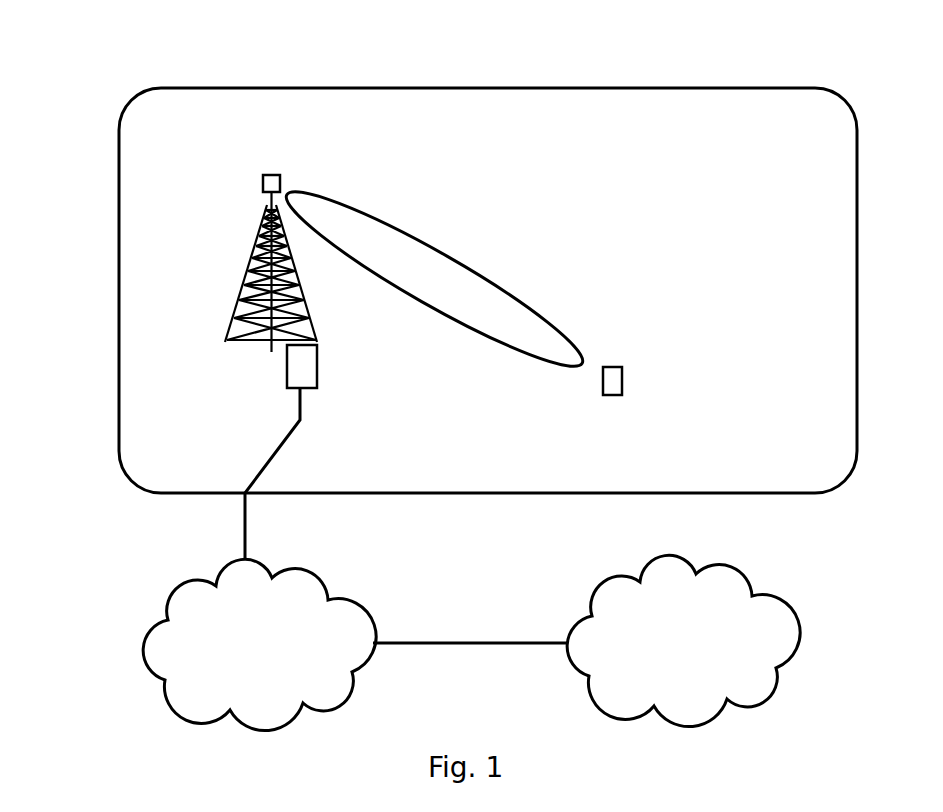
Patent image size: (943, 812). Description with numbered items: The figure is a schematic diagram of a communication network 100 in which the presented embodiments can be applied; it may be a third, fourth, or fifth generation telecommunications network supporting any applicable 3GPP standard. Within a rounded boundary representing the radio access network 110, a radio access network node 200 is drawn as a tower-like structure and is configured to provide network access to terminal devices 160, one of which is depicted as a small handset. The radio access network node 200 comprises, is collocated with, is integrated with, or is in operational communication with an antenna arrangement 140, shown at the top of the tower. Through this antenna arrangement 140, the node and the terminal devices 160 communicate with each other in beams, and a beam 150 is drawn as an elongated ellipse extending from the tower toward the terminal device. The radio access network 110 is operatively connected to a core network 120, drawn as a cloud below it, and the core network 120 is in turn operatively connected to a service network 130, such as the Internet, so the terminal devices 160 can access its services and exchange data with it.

The communication network 100 is at (195, 60).
The radio access network 110 is at (119, 327).
The core network 120 is at (272, 655).
The service network 130 is at (708, 660).
The antenna arrangement 140 is at (262, 183).
The beam 150 is at (428, 300).
The terminal devices 160 is at (624, 378).
The radio access network node 200 is at (300, 369).